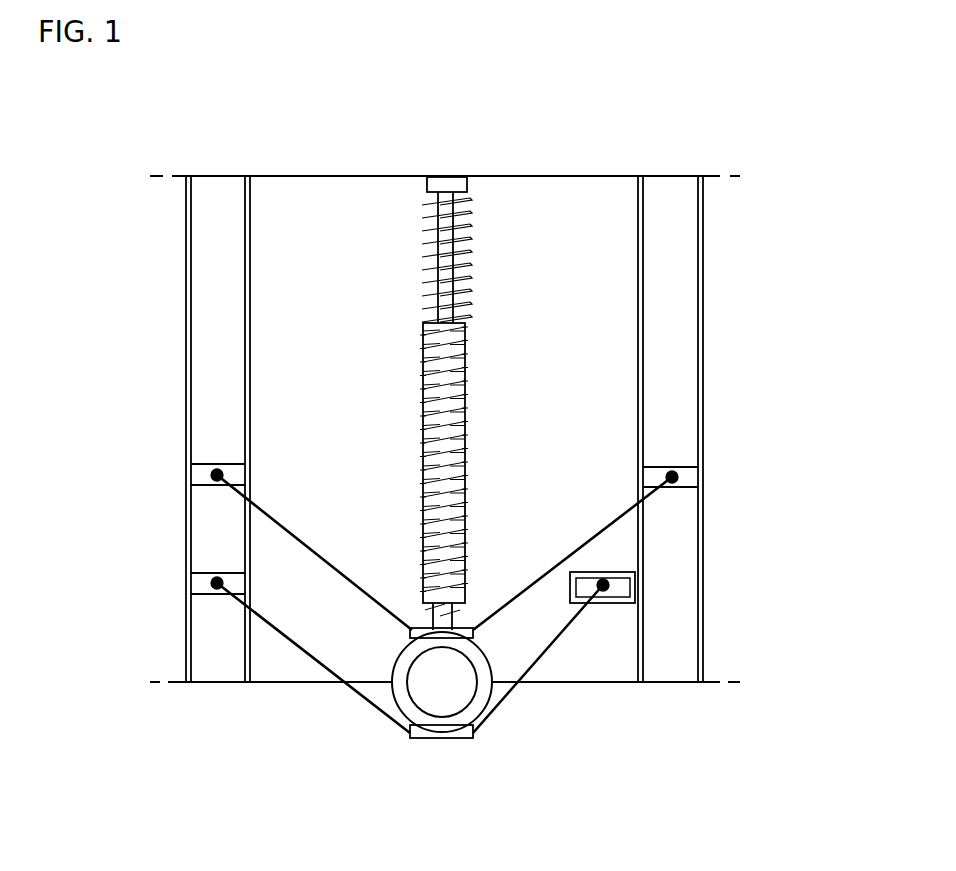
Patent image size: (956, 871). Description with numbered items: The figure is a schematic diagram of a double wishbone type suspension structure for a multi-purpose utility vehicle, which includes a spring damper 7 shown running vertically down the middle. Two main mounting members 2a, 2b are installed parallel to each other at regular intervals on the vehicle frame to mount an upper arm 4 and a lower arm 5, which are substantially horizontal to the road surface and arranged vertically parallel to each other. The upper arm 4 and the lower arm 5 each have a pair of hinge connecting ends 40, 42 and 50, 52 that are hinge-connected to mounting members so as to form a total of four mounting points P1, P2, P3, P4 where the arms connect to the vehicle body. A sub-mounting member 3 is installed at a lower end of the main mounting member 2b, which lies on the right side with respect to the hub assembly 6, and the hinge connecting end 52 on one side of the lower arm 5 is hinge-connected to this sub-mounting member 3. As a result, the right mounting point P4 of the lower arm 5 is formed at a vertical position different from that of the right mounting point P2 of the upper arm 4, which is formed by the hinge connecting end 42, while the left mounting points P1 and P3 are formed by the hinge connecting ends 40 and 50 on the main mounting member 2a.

The main mounting member 2a is at (218, 297).
The main mounting member 2b is at (678, 297).
The sub-mounting member 3 is at (618, 573).
The upper arm 4 is at (560, 557).
The lower arm 5 is at (512, 700).
The hub assembly 6 is at (430, 718).
The spring damper 7 is at (467, 300).
The hinge connecting end 40 is at (203, 464).
The hinge connecting end 42 is at (690, 476).
The hinge connecting end 50 is at (218, 594).
The hinge connecting end 52 is at (618, 588).
The mounting point P1 is at (215, 477).
The mounting point P2 is at (672, 475).
The mounting point P3 is at (215, 584).
The mounting point P4 is at (603, 592).